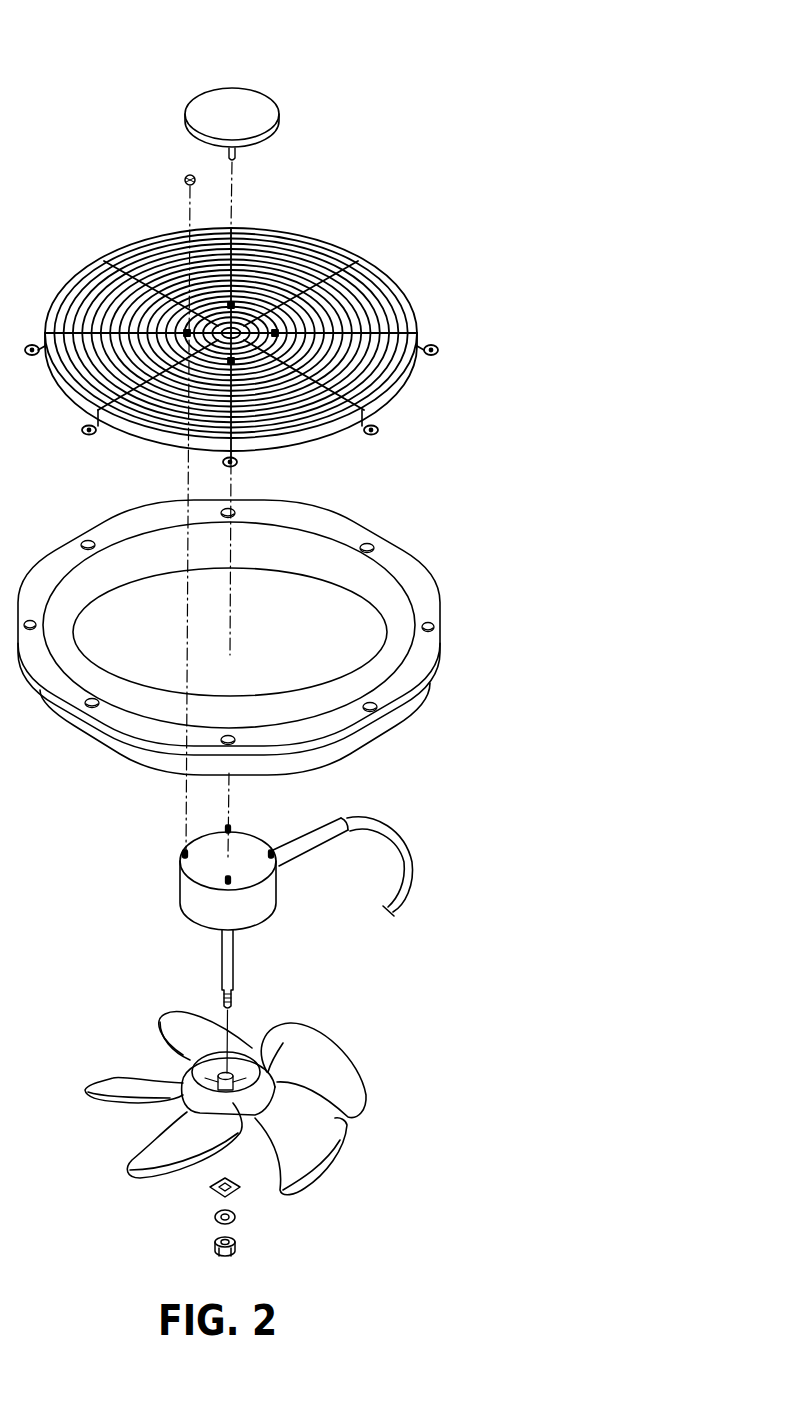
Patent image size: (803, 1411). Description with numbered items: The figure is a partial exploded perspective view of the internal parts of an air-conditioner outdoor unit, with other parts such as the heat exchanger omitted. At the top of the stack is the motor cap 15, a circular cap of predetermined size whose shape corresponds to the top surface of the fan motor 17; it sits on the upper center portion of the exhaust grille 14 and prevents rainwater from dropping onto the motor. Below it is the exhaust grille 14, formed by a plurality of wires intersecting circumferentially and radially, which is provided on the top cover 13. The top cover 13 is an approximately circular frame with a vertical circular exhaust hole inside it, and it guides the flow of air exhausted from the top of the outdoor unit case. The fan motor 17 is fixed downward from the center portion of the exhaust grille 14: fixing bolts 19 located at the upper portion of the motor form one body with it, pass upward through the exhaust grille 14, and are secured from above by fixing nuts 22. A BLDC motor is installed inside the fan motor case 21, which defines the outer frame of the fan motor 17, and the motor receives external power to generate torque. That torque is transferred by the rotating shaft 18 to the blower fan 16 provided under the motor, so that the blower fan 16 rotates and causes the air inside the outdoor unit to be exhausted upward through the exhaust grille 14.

The top cover 13 is at (411, 531).
The exhaust grille 14 is at (396, 269).
The motor cap 15 is at (279, 88).
The blower fan 16 is at (371, 1043).
The fan motor 17 is at (424, 826).
The rotating shaft 18 is at (227, 957).
The fixing bolt 19 is at (182, 855).
The fan motor case 21 is at (190, 893).
The fixing nut 22 is at (184, 179).